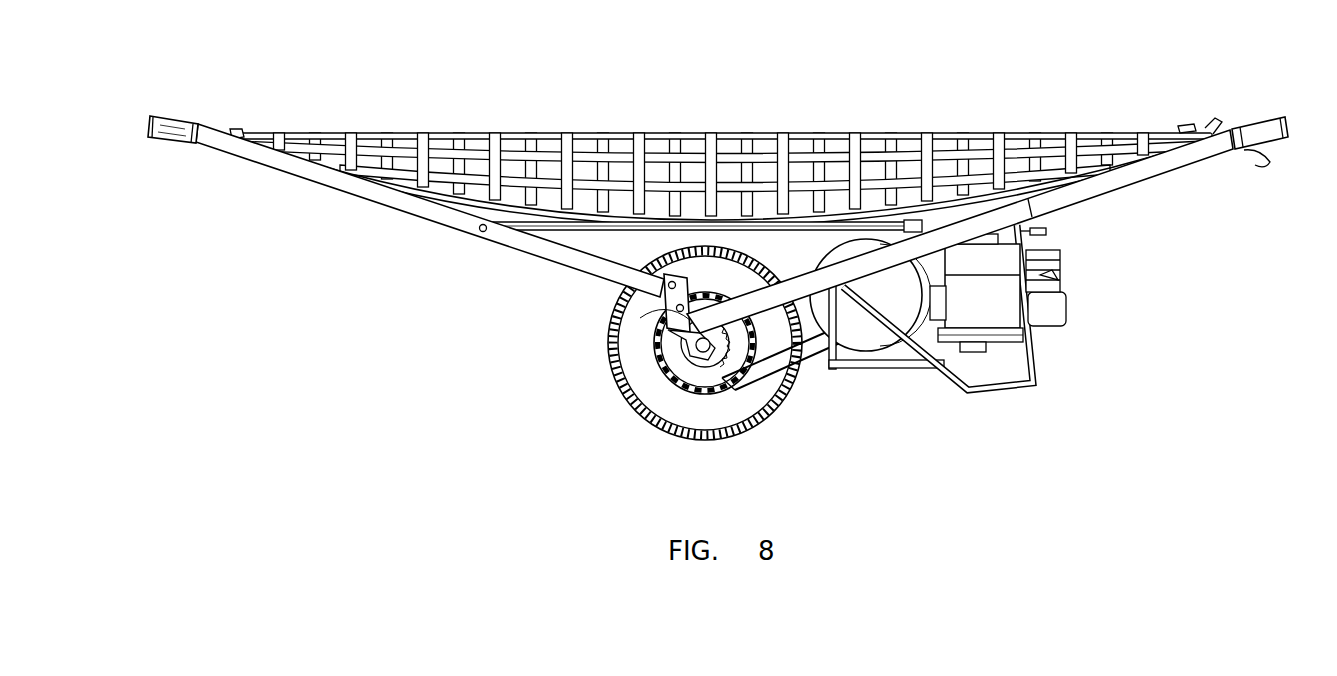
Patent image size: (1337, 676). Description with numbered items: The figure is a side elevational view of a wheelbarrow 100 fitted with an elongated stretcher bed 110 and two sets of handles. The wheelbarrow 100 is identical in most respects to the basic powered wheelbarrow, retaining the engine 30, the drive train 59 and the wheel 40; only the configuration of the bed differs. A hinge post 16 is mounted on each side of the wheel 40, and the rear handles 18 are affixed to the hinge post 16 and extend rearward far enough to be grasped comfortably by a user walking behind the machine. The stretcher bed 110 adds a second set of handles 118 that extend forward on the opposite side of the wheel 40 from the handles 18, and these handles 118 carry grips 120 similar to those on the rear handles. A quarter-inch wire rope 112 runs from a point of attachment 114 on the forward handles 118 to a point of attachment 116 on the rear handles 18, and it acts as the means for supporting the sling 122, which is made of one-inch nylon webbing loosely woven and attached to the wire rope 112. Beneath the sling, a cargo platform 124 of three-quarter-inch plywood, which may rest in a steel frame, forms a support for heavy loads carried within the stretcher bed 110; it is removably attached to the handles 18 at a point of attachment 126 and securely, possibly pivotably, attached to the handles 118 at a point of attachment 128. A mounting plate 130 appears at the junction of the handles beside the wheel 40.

The stretcher bed 110 is at (726, 144).
The wire rope 112 is at (580, 134).
The point of attachment 114 is at (240, 131).
The point of attachment 116 is at (1184, 128).
The handles 118 is at (430, 210).
The grips 120 is at (165, 131).
The sling 122 is at (785, 163).
The cargo platform 124 is at (756, 175).
The point of attachment 126 is at (916, 223).
The point of attachment 128 is at (482, 232).
The mounting plate 130 is at (665, 291).
The hinge post 16 is at (640, 318).
The handles 18 is at (1120, 170).
The engine 30 is at (1068, 300).
The wheel 40 is at (612, 380).
The drive train 59 is at (833, 372).
The wheelbarrow 100 is at (979, 337).